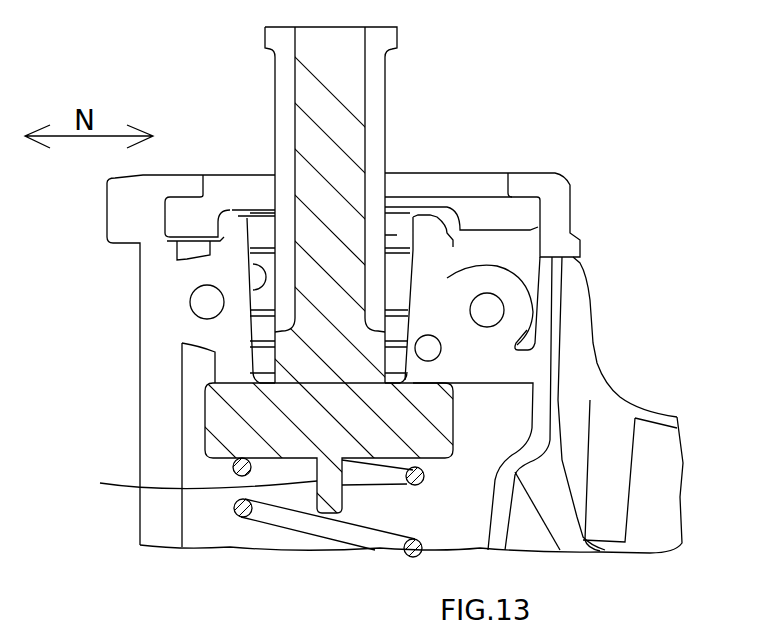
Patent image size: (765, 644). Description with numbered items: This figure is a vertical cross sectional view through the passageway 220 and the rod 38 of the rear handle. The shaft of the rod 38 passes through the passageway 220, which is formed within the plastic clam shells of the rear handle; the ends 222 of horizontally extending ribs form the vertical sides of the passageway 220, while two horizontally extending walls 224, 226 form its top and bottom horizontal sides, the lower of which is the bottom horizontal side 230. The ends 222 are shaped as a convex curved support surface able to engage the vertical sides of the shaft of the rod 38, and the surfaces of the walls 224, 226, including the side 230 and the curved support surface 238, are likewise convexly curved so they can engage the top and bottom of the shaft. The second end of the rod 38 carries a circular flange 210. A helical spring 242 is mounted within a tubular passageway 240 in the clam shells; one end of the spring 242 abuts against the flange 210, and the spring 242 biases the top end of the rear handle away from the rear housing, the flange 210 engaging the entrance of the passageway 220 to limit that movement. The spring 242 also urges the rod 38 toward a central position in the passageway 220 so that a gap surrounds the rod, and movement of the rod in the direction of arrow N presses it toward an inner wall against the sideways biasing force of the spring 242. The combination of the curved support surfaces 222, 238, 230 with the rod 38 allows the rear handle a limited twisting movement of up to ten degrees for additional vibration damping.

The rod 38 is at (345, 77).
The circular flange 210 is at (453, 420).
The passageway 220 is at (260, 215).
The ends of the ribs 222 is at (395, 360).
The wall 224 is at (237, 227).
The wall 226 is at (435, 233).
The bottom horizontal side 230 is at (400, 237).
The curved support surface 238 is at (253, 265).
The tubular passageway 240 is at (213, 510).
The helical spring 242 is at (270, 467).